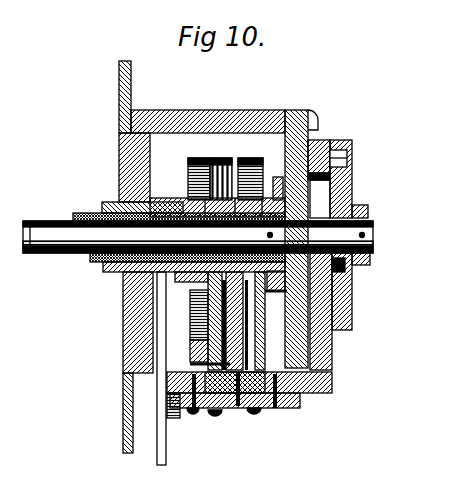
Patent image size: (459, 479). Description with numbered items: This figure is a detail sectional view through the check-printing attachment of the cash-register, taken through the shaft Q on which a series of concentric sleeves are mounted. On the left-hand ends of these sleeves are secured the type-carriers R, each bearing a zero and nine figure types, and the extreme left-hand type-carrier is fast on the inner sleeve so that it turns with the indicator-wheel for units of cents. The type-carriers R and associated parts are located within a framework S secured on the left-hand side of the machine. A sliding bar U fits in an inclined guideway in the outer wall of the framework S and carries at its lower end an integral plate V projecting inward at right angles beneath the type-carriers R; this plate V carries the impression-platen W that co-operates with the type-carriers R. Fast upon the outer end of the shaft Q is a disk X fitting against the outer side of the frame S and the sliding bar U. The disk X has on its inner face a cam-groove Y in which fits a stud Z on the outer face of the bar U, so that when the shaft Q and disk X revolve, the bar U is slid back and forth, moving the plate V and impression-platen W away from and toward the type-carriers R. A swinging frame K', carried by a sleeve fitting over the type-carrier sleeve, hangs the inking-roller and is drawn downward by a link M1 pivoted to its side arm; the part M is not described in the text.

The framework S is at (190, 112).
The swinging frame K' is at (179, 223).
The shaft Q is at (27, 254).
The type-carriers R is at (255, 160).
The link M1 is at (163, 442).
The lever M is at (38, 475).
The disk X is at (352, 193).
The stud Z is at (348, 157).
The sliding bar U is at (326, 340).
The cam-groove Y is at (345, 271).
The plate V is at (283, 380).
The impression-platen W is at (247, 400).